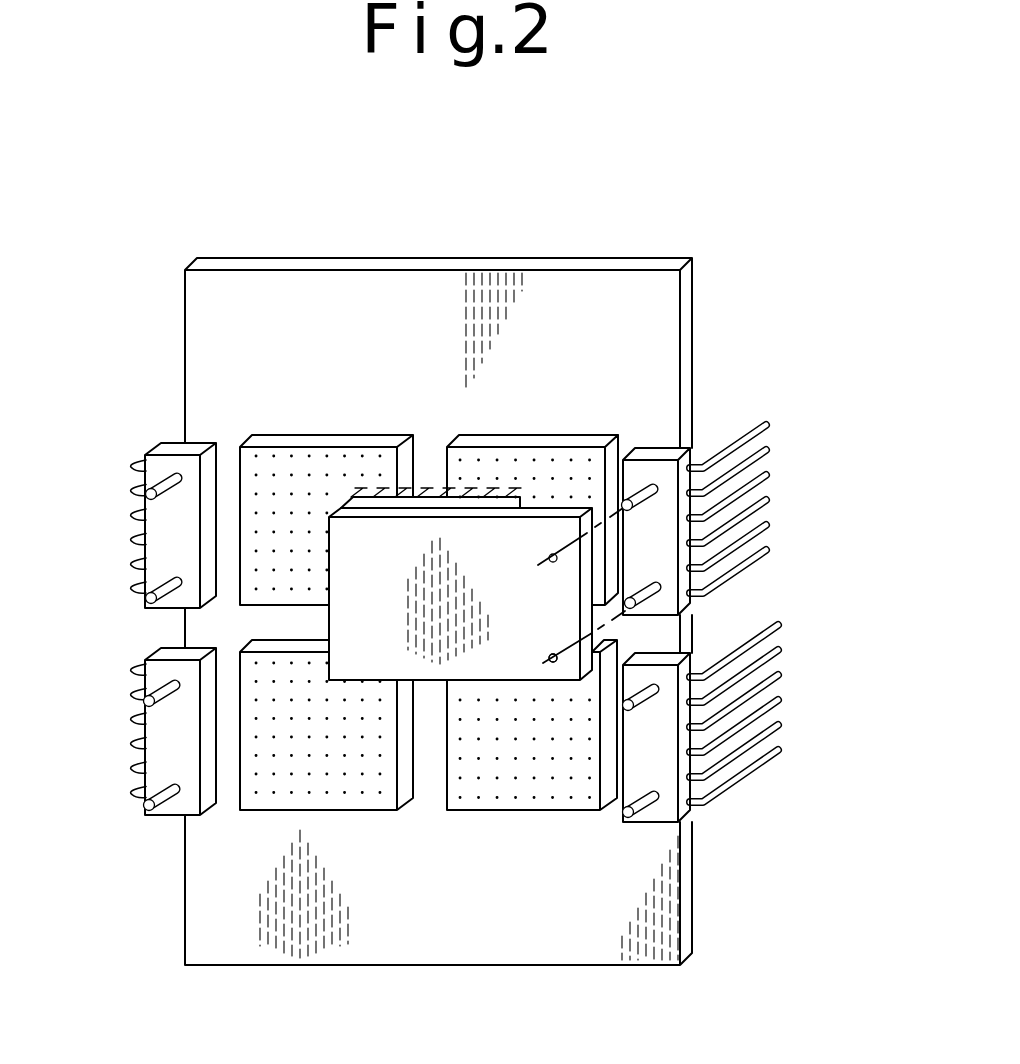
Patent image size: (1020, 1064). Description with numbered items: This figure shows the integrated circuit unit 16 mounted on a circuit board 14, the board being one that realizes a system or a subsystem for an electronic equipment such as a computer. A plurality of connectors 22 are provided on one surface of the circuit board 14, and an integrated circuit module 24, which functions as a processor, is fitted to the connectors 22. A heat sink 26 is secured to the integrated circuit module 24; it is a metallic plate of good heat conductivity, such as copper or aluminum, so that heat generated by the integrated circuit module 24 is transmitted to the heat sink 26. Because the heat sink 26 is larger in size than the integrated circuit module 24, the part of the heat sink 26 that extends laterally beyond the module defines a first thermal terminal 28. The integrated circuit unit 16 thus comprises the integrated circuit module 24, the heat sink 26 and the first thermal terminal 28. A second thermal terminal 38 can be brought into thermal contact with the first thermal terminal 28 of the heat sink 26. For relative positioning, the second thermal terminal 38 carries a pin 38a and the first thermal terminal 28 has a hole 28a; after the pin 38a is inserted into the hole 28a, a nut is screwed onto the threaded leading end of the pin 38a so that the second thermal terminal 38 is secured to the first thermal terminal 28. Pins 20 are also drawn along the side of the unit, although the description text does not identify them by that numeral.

The circuit board 14 is at (635, 293).
The integrated circuit unit 16 is at (776, 251).
The terminal pins 20 is at (772, 687).
The connectors 22 is at (492, 453).
The integrated circuit module 24 is at (433, 495).
The heat sink 26 is at (385, 553).
The first thermal terminal 28 is at (551, 548).
The hole 28a is at (552, 664).
The second thermal terminal 38 is at (655, 768).
The pin 38a is at (647, 803).